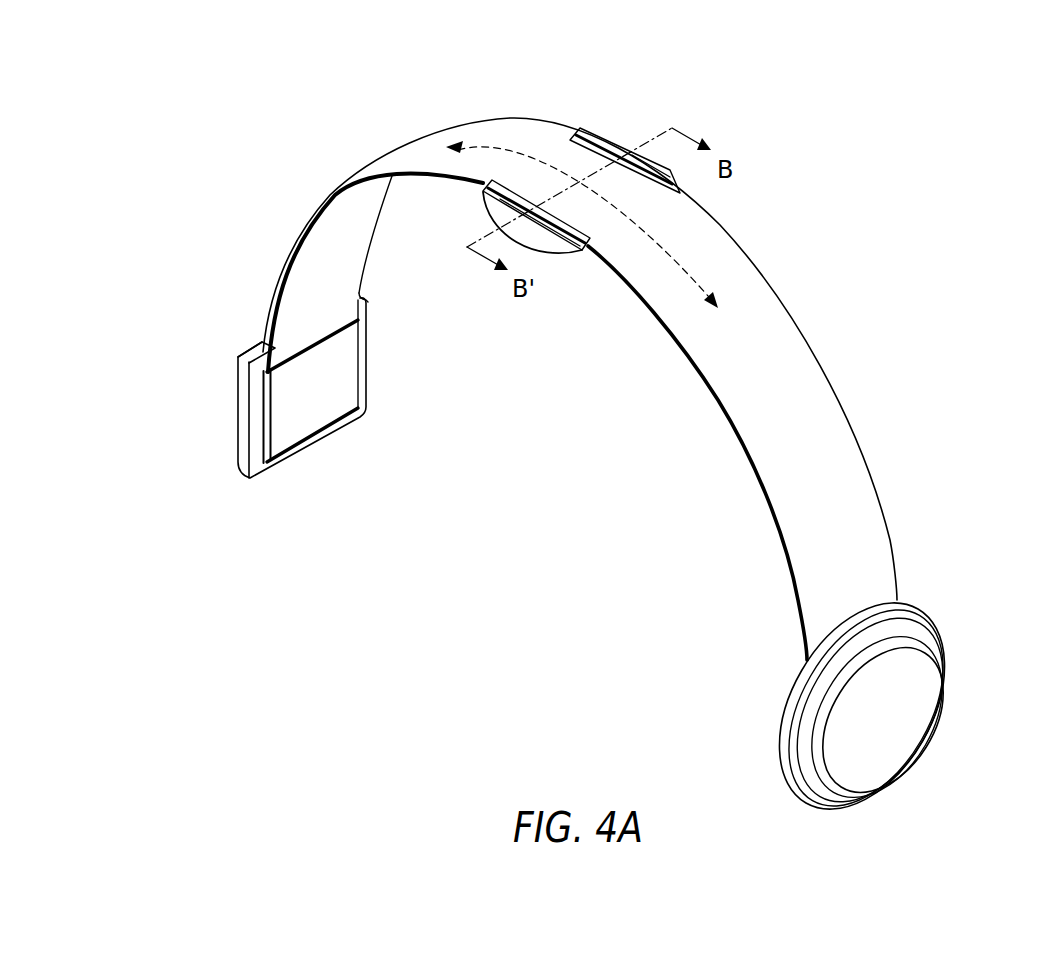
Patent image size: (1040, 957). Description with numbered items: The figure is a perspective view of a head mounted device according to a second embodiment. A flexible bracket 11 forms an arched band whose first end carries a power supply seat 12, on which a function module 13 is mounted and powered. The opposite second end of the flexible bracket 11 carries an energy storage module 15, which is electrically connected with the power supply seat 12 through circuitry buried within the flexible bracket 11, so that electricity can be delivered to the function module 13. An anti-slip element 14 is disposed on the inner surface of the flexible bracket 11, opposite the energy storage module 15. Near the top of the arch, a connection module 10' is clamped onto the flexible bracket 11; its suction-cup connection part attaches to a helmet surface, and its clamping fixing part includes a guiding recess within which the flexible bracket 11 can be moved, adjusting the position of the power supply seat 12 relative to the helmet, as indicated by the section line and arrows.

The connection module 10' is at (581, 156).
The flexible bracket 11 is at (800, 370).
The power supply seat 12 is at (905, 602).
The function module 13 is at (920, 723).
The anti-slip element 14 is at (313, 420).
The energy storage module 15 is at (243, 402).